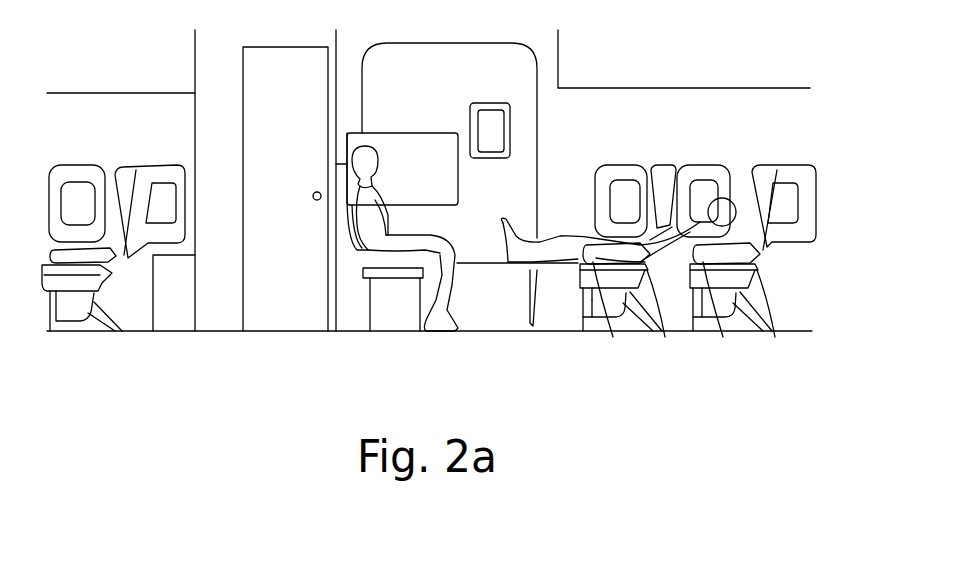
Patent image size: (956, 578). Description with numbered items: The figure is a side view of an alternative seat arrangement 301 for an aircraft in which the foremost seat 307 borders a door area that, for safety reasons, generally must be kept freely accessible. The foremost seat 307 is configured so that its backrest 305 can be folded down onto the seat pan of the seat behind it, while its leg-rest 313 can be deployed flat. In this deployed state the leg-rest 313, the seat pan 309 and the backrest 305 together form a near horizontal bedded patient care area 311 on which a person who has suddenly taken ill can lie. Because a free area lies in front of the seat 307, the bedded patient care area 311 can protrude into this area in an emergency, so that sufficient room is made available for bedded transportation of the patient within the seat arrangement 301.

The seat arrangement 301 is at (681, 337).
The backrest 305 is at (713, 303).
The foremost seat 307 is at (617, 327).
The seat pan 309 is at (650, 333).
The bedded patient care area 311 is at (598, 320).
The leg-rest 313 is at (536, 320).